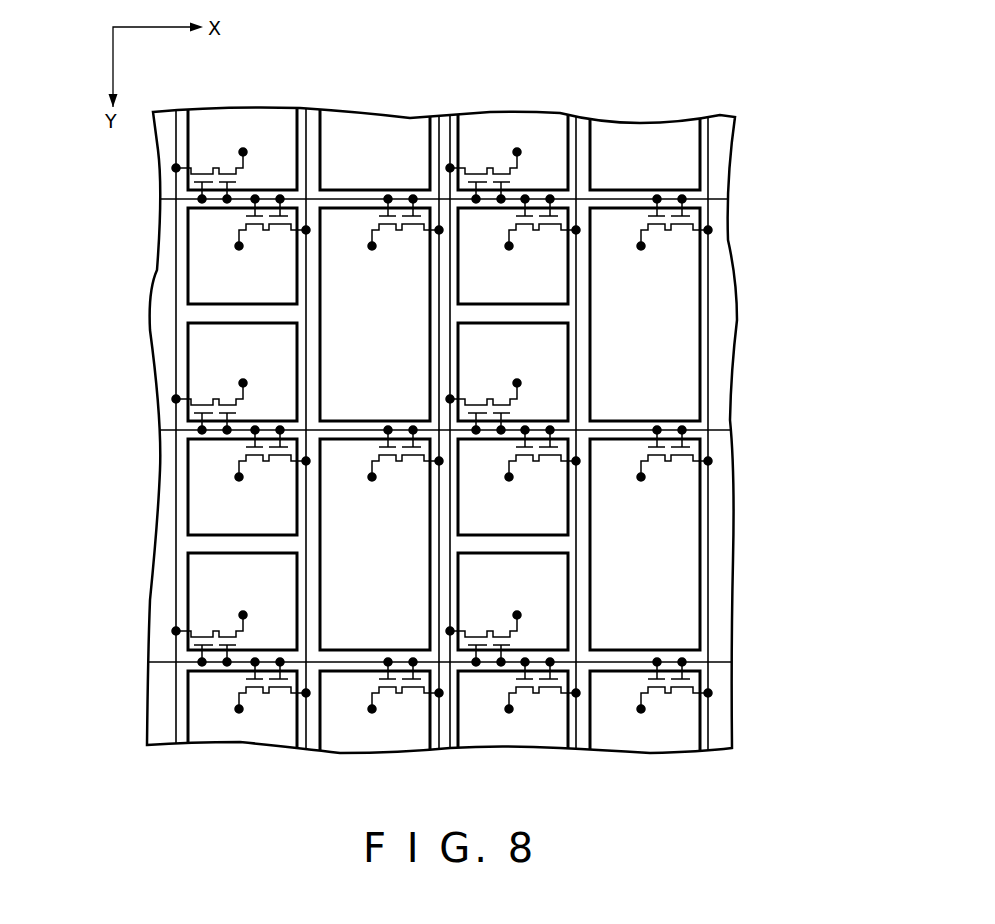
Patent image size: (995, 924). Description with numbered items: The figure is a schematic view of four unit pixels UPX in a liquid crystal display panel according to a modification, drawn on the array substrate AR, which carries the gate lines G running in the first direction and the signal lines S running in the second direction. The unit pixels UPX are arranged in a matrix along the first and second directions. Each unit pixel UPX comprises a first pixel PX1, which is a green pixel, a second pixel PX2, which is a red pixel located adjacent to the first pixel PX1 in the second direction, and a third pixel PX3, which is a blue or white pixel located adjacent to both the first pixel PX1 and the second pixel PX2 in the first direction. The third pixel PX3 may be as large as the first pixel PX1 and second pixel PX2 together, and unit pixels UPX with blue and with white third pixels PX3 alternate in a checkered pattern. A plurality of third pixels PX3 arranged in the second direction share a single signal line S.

The array substrate AR is at (760, 119).
The signal line S is at (177, 130).
The gate line G is at (165, 199).
The unit pixel UPX is at (435, 429).
The first pixel PX1 is at (441, 486).
The second pixel PX2 is at (194, 262).
The third pixel PX3 is at (329, 315).